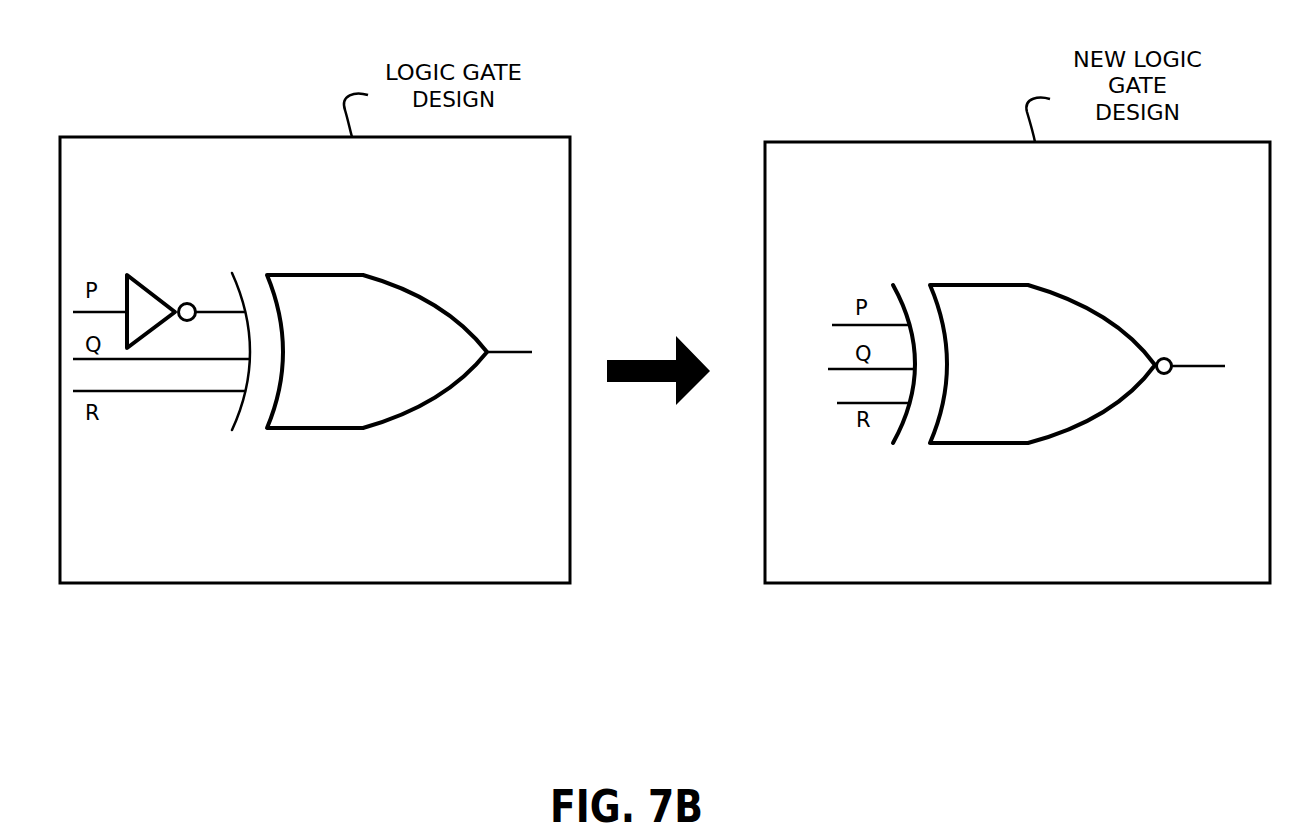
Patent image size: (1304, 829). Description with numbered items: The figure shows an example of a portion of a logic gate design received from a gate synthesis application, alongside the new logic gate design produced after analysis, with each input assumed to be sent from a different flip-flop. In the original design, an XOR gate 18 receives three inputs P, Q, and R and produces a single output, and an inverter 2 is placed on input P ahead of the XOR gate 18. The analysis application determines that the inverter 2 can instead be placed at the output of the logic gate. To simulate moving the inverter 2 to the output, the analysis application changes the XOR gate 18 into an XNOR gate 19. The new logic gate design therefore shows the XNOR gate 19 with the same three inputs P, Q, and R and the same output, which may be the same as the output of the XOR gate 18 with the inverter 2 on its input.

The inverter 2 is at (153, 290).
The XOR gate 18 is at (362, 430).
The XNOR gate 19 is at (1030, 443).